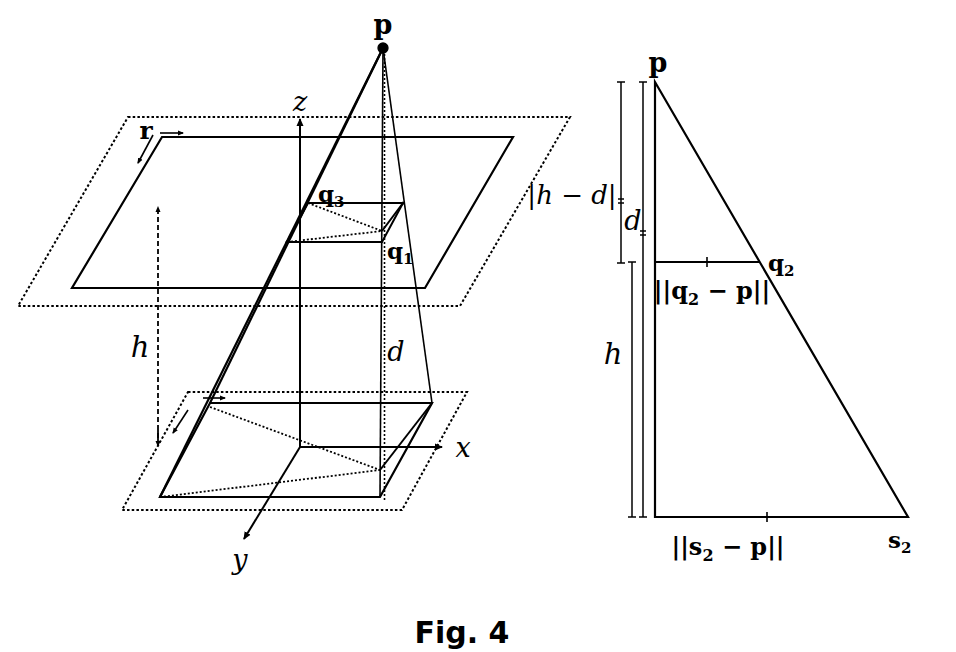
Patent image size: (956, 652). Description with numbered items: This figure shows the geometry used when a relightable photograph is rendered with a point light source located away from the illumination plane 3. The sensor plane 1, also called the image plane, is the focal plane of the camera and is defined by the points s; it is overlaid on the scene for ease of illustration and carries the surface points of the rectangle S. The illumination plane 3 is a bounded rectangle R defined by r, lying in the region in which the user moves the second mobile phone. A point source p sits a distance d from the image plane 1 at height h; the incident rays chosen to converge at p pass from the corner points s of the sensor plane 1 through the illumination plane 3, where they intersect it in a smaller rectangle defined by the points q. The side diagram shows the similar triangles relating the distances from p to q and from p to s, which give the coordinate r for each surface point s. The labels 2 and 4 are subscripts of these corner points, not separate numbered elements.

The sensor plane 1 is at (397, 467).
The corner point q2 / s2 2 is at (419, 197).
The illumination plane 3 is at (450, 250).
The corner point q4 / s4 4 is at (275, 250).